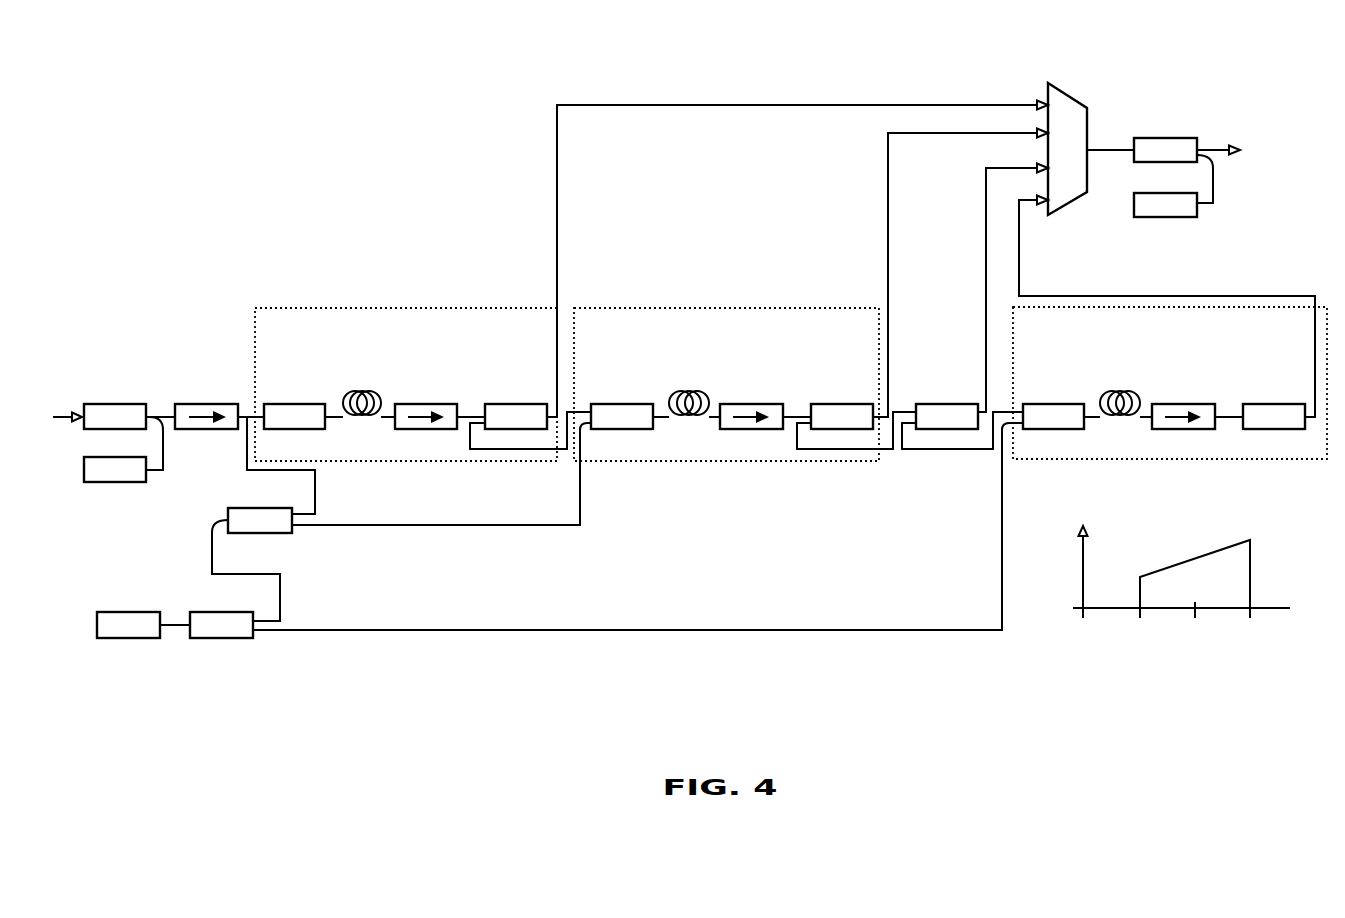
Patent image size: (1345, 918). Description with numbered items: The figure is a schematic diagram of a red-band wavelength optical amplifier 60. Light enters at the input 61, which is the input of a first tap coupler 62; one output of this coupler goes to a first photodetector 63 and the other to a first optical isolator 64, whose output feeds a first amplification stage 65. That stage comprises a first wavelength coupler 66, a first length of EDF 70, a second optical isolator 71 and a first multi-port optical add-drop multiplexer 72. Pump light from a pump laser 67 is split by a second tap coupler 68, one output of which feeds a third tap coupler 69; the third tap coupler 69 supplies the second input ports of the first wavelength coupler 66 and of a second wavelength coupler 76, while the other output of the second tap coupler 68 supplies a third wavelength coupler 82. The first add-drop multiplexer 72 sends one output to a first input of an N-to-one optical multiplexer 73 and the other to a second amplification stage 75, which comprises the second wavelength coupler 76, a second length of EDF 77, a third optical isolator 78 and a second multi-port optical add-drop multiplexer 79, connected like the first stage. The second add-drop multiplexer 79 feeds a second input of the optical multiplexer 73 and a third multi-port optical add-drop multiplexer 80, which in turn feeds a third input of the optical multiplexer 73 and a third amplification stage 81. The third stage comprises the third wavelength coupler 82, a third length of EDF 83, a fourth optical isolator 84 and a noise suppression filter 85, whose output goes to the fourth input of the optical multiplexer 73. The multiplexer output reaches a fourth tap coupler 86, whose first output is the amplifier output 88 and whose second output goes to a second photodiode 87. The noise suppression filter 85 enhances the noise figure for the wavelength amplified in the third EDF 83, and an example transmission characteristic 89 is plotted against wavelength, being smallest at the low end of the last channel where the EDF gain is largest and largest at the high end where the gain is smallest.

The optical amplifier 60 is at (293, 171).
The input 61 is at (61, 412).
The first tap coupler 62 is at (113, 404).
The first photodetector 63 is at (113, 482).
The first optical isolator 64 is at (203, 404).
The first amplification stage 65 is at (402, 462).
The first wavelength coupler 66 is at (293, 404).
The pump laser 67 is at (125, 638).
The second tap coupler 68 is at (216, 638).
The third tap coupler 69 is at (258, 508).
The first length of EDF 70 is at (362, 391).
The second optical isolator 71 is at (424, 404).
The first multi-port optical add-drop multiplexer 72 is at (514, 404).
The N:1 optical multiplexer 73 is at (1070, 95).
The second amplification stage 75 is at (720, 462).
The second wavelength coupler 76 is at (620, 404).
The second length of EDF 77 is at (689, 391).
The third optical isolator 78 is at (752, 404).
The second multi-port optical add-drop multiplexer 79 is at (842, 404).
The third multi-port optical add-drop multiplexer 80 is at (946, 404).
The third amplification stage 81 is at (1165, 462).
The third wavelength coupler 82 is at (1051, 404).
The third length of EDF 83 is at (1119, 391).
The fourth optical isolator 84 is at (1183, 404).
The noise suppression filter 85 is at (1273, 404).
The fourth tap coupler 86 is at (1162, 138).
The second photodiode 87 is at (1162, 217).
The output 88 is at (1220, 148).
The transmission characteristic 89 is at (1275, 557).